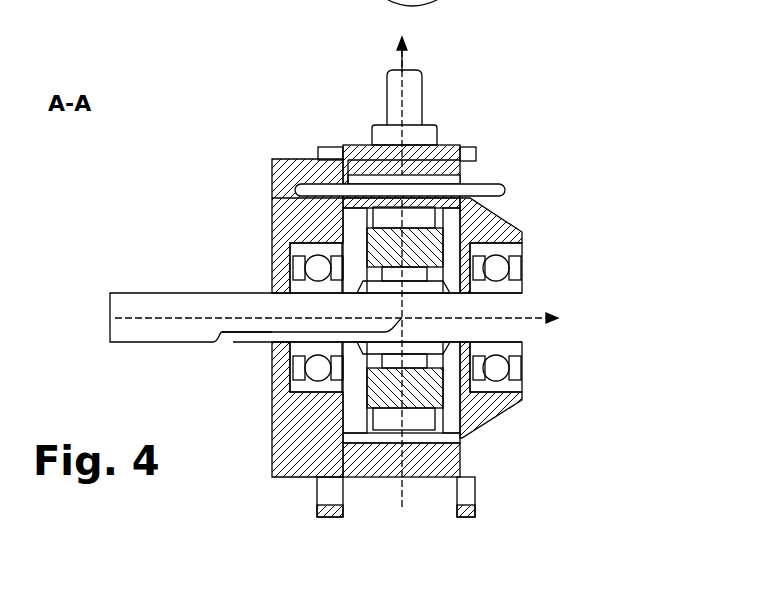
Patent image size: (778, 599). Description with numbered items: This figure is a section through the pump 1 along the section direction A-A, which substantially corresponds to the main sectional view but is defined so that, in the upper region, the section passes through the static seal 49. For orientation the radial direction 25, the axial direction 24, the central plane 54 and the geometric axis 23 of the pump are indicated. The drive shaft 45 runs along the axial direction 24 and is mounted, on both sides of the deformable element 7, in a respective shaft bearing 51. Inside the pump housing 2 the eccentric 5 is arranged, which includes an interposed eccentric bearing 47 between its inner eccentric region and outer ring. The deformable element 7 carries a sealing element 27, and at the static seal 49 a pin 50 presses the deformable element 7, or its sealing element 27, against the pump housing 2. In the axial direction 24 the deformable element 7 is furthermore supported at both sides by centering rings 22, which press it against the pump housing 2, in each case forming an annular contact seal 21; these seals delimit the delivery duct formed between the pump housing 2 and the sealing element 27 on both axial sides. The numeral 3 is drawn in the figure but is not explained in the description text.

The pump 1 is at (116, 190).
The pump housing 2 is at (478, 178).
The shaft end 3 is at (420, 75).
The eccentric 5 is at (220, 341).
The deformable element 7 is at (372, 398).
The annular contact seal 21 is at (318, 498).
The centering ring 22 is at (298, 463).
The geometric axis 23 is at (530, 318).
The axial direction 24 is at (545, 318).
The radial direction 25 is at (403, 62).
The sealing element 27 is at (505, 135).
The drive shaft 45 is at (172, 292).
The eccentric bearing 47 is at (478, 223).
The static seal 49 is at (316, 188).
The pin 50 is at (400, 197).
The shaft bearing 51 is at (300, 370).
The central plane 54 is at (403, 62).